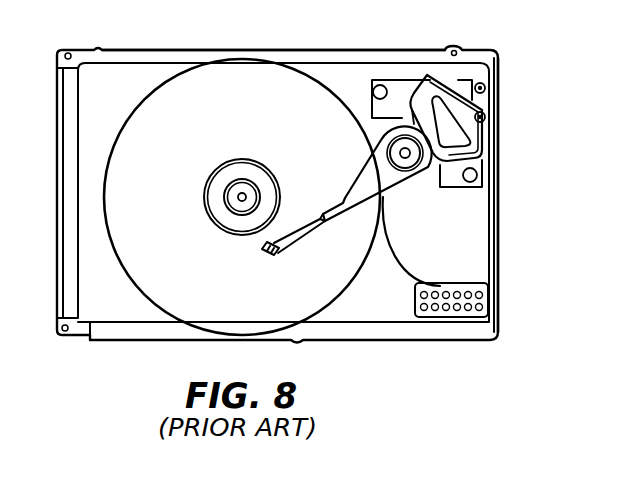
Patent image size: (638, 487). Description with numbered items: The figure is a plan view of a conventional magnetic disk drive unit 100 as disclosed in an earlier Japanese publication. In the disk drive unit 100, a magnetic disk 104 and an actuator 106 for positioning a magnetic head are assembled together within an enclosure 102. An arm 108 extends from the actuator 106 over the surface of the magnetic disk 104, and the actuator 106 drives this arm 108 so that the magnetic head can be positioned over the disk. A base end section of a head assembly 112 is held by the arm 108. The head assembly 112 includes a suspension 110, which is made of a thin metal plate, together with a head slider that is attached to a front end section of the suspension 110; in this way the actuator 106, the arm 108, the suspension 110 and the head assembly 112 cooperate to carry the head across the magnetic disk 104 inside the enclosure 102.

The disk drive unit 100 is at (405, 37).
The enclosure 102 is at (304, 49).
The magnetic disk 104 is at (183, 150).
The actuator 106 is at (510, 122).
The arm 108 is at (372, 190).
The suspension 110 is at (301, 247).
The head assembly 112 is at (278, 262).